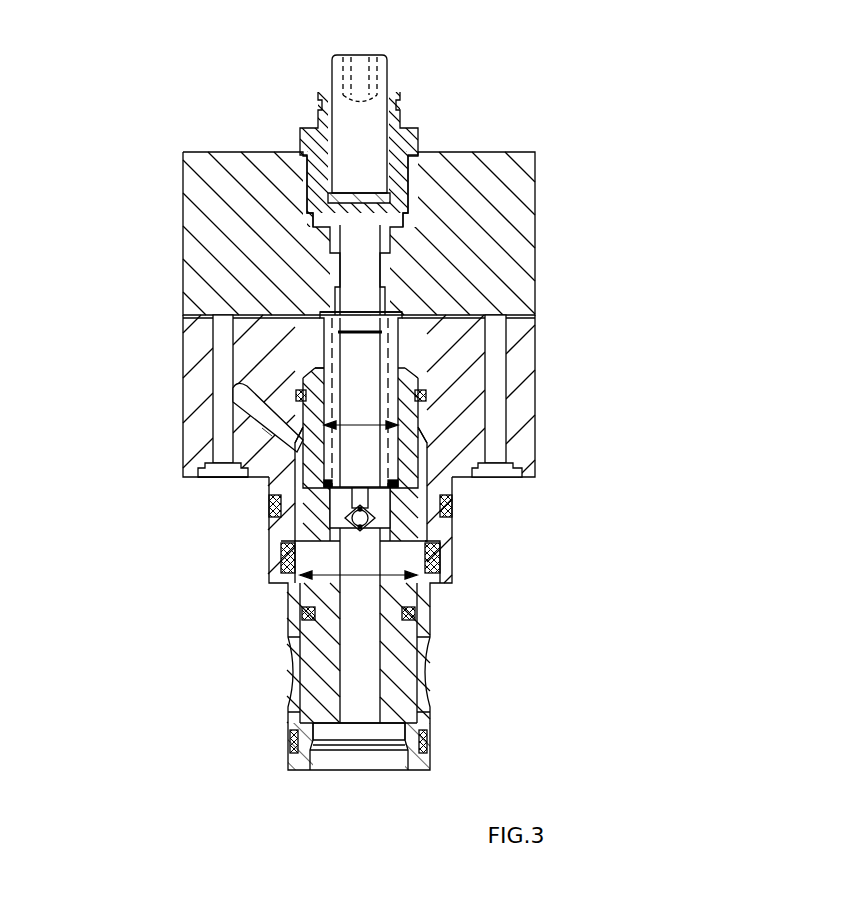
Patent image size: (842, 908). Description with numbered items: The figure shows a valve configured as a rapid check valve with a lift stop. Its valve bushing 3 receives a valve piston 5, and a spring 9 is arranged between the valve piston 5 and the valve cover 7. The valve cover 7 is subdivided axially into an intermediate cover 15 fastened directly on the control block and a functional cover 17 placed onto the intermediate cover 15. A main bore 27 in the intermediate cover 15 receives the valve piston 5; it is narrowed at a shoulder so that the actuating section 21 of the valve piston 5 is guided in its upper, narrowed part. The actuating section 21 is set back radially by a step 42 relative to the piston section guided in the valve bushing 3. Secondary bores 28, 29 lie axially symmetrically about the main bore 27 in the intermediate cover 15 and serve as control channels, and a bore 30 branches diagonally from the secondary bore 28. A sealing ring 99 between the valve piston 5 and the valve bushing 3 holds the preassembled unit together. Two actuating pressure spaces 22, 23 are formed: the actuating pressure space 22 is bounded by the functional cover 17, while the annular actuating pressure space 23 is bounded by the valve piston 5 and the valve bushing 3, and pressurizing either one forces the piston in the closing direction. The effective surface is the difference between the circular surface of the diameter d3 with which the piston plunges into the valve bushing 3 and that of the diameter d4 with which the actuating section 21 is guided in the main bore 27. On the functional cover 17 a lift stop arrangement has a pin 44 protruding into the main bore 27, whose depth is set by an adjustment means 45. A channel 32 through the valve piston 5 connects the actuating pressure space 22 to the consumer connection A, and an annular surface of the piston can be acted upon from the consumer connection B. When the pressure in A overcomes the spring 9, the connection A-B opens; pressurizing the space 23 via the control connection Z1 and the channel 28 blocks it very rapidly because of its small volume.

The valve bushing 3 is at (430, 620).
The valve piston 5 is at (318, 675).
The valve cover 7 is at (138, 208).
The spring 9 is at (398, 345).
The intermediate cover 15 is at (522, 385).
The functional cover 17 is at (505, 230).
The actuating section 21 is at (300, 383).
The actuating pressure space 22 is at (405, 338).
The actuating pressure space 23 is at (418, 462).
The main bore 27 is at (305, 350).
The secondary bore 28 is at (222, 415).
The secondary bore 29 is at (498, 425).
The bore 30 is at (262, 428).
The channel 32 is at (372, 645).
The step 42 is at (418, 487).
The pin 44 is at (365, 270).
The adjustment means 45 is at (365, 135).
The sealing ring 99 is at (426, 395).
The diameter d3 is at (357, 563).
The diameter d4 is at (360, 420).
The consumer connection A is at (358, 772).
The consumer connection B is at (420, 705).
The control connection Z1 is at (222, 480).